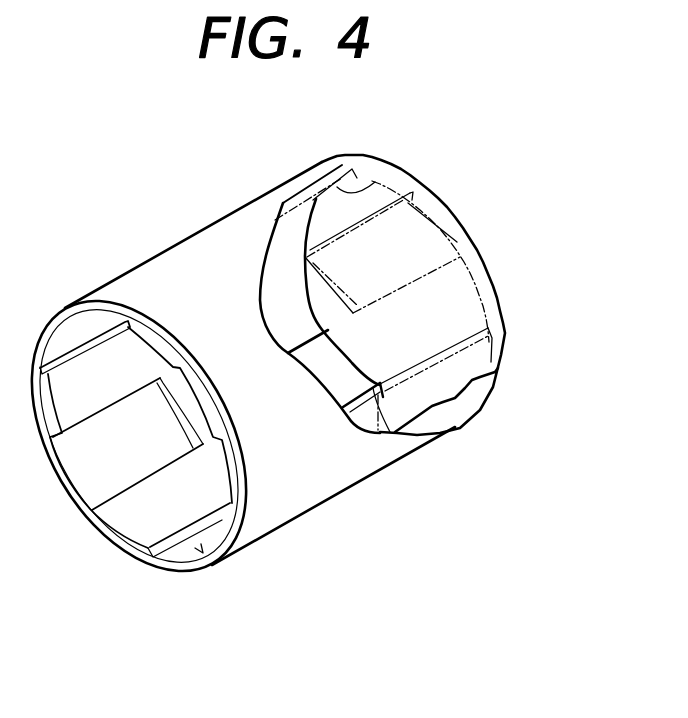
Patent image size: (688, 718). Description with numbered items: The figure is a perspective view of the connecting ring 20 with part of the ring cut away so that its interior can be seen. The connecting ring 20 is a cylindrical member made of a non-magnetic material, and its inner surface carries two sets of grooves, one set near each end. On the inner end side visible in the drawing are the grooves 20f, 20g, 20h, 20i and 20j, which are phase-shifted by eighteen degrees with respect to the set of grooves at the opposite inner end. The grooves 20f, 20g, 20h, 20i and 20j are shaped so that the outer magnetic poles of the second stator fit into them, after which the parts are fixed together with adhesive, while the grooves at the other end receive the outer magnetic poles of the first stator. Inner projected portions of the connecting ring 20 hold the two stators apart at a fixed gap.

The connecting ring 20 is at (370, 558).
The groove 20f is at (376, 182).
The groove 20g is at (287, 293).
The groove 20h is at (363, 415).
The groove 20i is at (473, 353).
The groove 20j is at (410, 230).